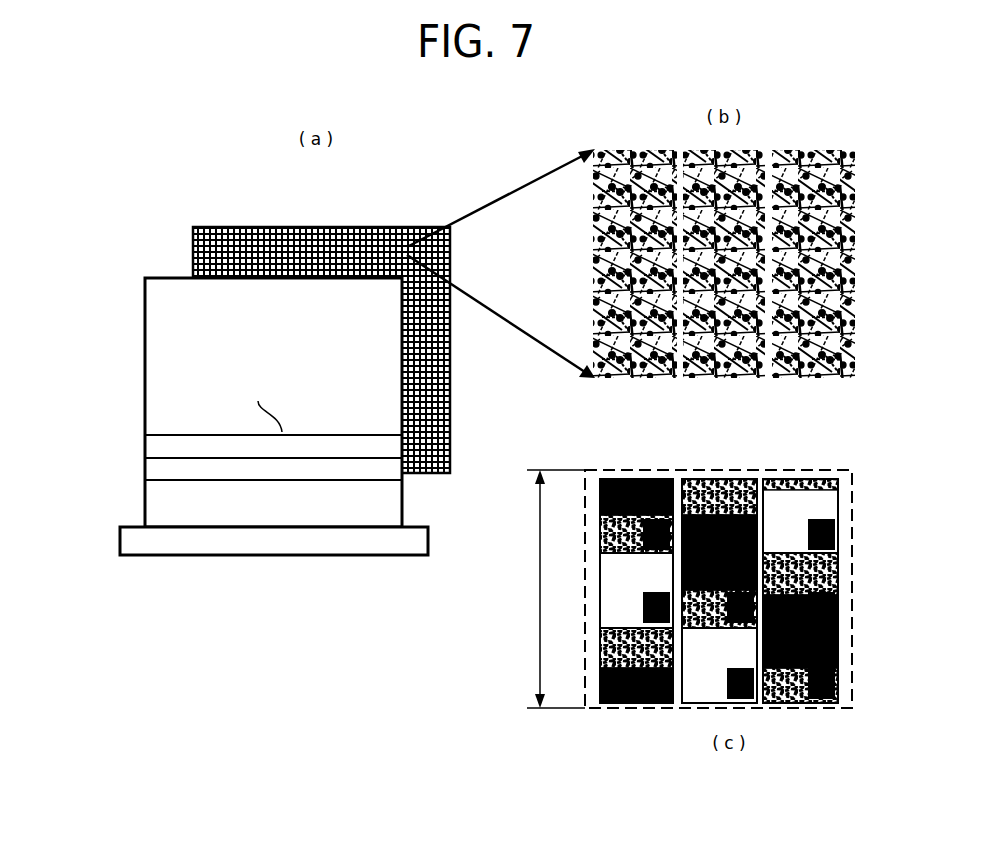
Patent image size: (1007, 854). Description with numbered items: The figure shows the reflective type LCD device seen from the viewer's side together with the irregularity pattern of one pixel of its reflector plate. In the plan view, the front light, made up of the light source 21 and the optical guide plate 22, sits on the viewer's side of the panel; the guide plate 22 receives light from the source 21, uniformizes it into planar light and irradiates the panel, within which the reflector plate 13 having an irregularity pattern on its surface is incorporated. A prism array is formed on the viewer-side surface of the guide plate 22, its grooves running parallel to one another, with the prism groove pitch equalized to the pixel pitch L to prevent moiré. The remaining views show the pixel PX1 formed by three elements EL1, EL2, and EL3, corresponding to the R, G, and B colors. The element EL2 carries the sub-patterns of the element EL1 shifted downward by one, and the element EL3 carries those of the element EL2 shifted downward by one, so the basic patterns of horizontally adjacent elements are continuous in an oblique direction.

The reflector plate 13 is at (262, 228).
The optical guide plate 22 is at (165, 278).
The light source 21 is at (185, 543).
The first element EL1 is at (625, 380).
The second element EL2 is at (710, 380).
The third element EL3 is at (795, 380).
The pixel PX1 is at (578, 545).
The pixel pitch L is at (553, 589).